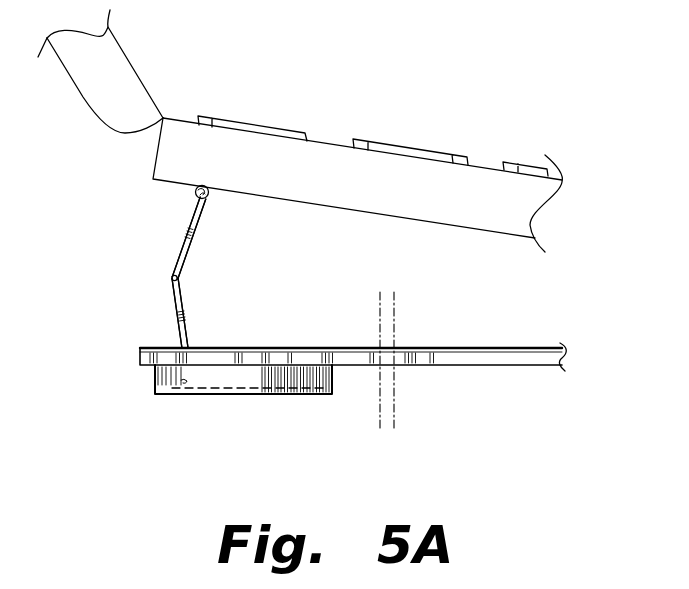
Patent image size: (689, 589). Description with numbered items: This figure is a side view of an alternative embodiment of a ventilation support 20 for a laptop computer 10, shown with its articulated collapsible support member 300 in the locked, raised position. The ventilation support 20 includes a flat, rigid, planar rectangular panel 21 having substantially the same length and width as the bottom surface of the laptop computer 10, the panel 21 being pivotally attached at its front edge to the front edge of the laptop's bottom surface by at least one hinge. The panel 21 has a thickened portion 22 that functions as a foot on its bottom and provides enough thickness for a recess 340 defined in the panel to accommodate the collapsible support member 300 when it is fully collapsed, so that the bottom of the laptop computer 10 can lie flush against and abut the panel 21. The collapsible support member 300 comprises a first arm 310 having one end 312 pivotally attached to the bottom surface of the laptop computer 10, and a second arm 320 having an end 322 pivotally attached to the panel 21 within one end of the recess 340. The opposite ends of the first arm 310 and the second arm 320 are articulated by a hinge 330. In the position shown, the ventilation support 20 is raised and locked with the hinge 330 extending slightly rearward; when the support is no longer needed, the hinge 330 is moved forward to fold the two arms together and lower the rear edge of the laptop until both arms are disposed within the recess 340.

The laptop computer 10 is at (333, 142).
The ventilation support 20 is at (472, 367).
The panel 21 is at (407, 348).
The thickened portion 22 is at (332, 395).
The collapsible support member 300 is at (180, 245).
The first arm 310 is at (192, 209).
The end of first arm 312 is at (212, 195).
The second arm 320 is at (188, 302).
The end of second arm 322 is at (178, 382).
The hinge 330 is at (172, 278).
The recess 340 is at (197, 392).